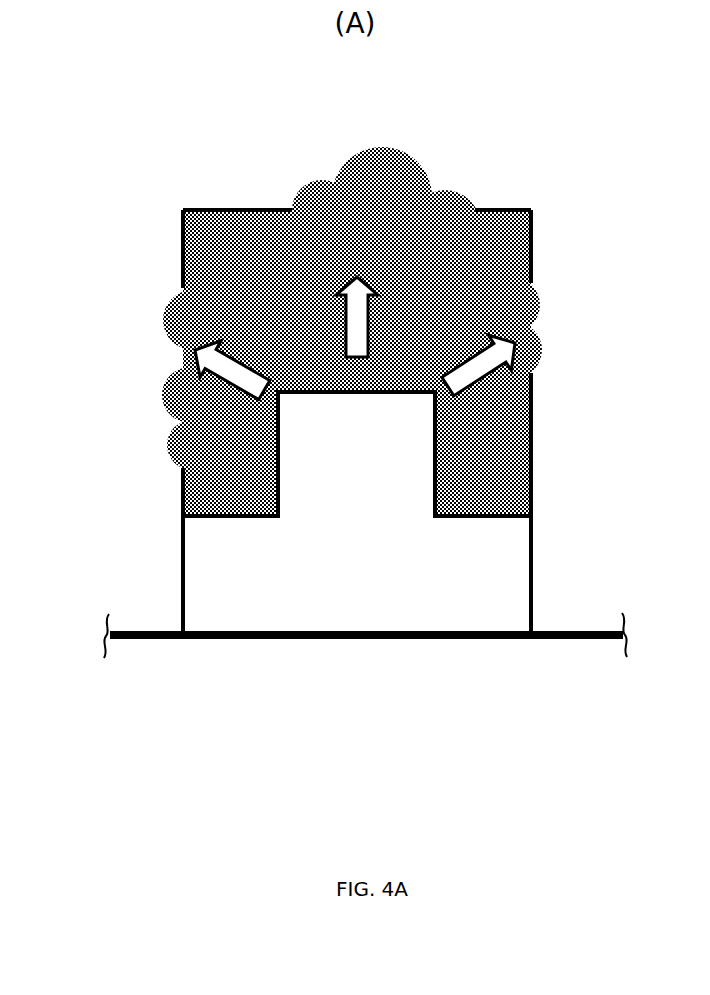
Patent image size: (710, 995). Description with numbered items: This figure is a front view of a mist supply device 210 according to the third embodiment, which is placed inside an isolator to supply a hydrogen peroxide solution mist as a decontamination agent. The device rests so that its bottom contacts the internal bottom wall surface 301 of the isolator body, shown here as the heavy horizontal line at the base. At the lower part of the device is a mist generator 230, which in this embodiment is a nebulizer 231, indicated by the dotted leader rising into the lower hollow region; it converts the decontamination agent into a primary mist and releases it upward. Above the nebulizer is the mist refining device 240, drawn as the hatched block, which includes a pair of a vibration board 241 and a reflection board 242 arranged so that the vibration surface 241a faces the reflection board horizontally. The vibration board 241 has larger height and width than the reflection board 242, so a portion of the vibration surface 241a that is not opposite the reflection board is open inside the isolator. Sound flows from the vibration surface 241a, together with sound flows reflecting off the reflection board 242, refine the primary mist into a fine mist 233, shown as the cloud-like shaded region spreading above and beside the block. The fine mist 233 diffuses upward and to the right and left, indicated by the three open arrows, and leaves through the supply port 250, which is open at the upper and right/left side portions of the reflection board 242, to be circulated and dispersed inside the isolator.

The mist supply device 210 is at (417, 116).
The mist generator 230 is at (553, 573).
The nebulizer 231 is at (367, 582).
The fine mist 233 is at (408, 238).
The mist refining device 240 is at (416, 301).
The vibration board 241 is at (251, 207).
The vibration surface 241a is at (214, 232).
The reflection board 242 is at (383, 493).
The supply port 250 is at (407, 373).
The bottom wall surface of isolator body 301 is at (152, 642).